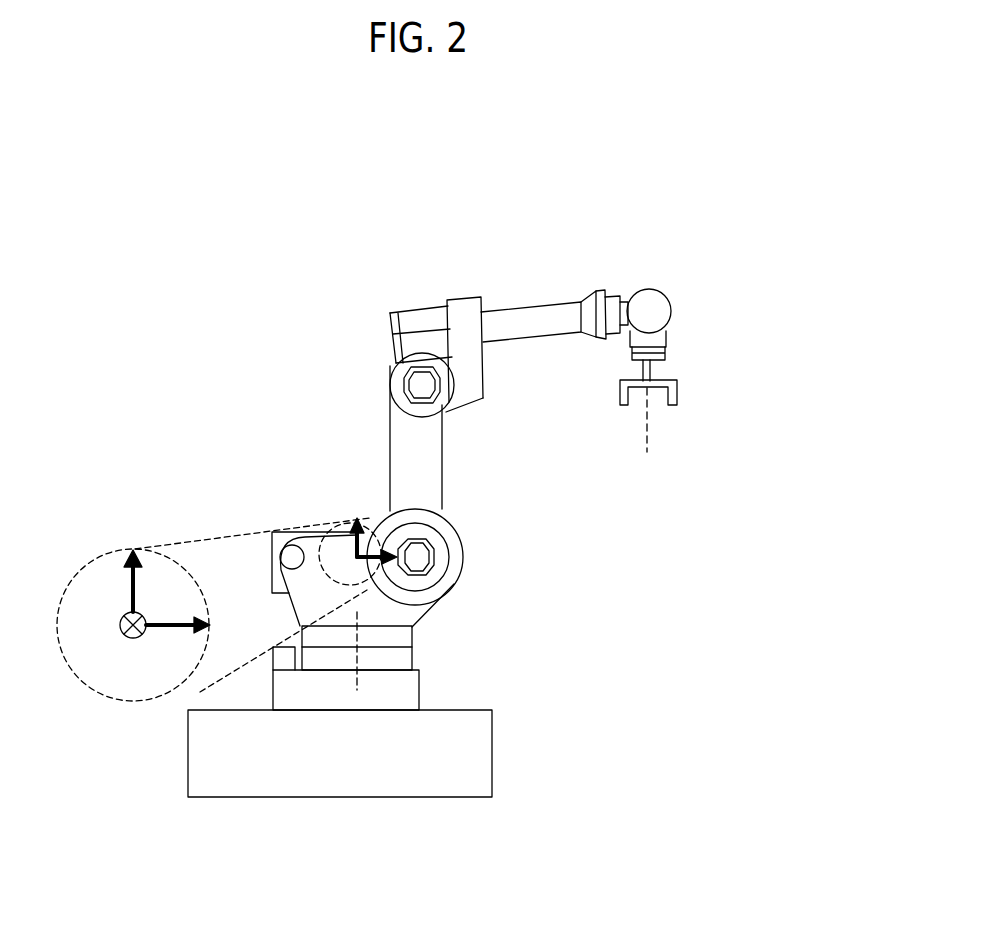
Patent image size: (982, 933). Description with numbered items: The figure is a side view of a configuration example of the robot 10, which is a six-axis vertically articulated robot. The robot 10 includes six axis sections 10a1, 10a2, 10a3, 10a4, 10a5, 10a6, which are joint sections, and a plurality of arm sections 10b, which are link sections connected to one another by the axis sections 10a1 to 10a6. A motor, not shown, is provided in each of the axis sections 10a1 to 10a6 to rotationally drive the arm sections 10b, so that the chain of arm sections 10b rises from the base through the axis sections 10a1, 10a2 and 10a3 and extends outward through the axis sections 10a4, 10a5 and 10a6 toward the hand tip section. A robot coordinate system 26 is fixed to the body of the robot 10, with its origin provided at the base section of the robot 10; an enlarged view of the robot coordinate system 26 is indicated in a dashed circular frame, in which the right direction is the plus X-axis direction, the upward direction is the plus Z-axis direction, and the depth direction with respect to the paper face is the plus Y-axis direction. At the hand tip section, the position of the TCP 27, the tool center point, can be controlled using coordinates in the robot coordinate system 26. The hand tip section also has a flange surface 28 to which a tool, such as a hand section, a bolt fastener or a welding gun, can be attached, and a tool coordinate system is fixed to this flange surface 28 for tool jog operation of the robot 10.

The robot 10 is at (325, 318).
The axis section 10a1 is at (362, 657).
The axis section 10a2 is at (420, 560).
The axis section 10a3 is at (420, 385).
The axis section 10a4 is at (597, 317).
The axis section 10a5 is at (655, 308).
The axis section 10a6 is at (662, 337).
The arm section 10b is at (407, 462).
The robot coordinate system 26 is at (342, 565).
The TCP 27 is at (652, 407).
The flange surface 28 is at (662, 353).